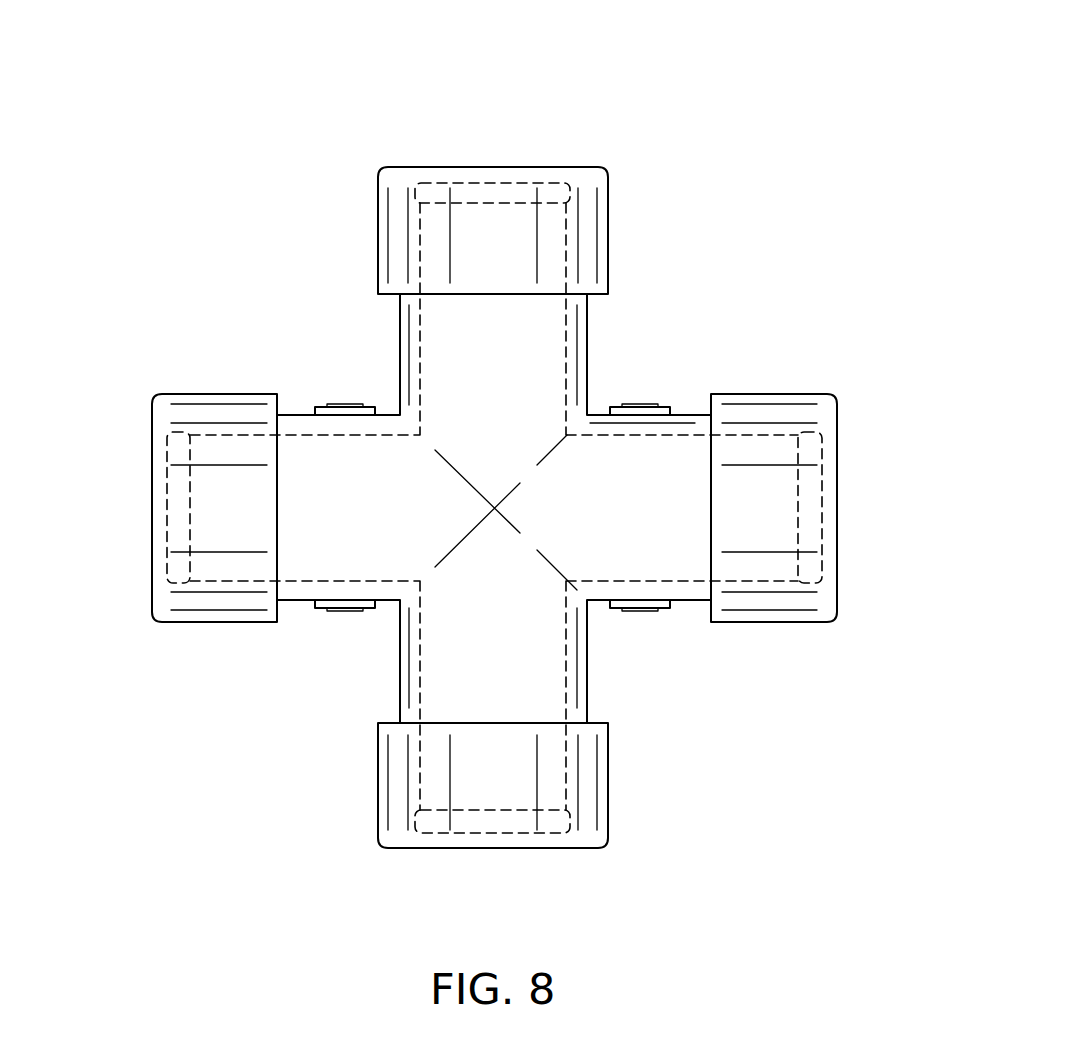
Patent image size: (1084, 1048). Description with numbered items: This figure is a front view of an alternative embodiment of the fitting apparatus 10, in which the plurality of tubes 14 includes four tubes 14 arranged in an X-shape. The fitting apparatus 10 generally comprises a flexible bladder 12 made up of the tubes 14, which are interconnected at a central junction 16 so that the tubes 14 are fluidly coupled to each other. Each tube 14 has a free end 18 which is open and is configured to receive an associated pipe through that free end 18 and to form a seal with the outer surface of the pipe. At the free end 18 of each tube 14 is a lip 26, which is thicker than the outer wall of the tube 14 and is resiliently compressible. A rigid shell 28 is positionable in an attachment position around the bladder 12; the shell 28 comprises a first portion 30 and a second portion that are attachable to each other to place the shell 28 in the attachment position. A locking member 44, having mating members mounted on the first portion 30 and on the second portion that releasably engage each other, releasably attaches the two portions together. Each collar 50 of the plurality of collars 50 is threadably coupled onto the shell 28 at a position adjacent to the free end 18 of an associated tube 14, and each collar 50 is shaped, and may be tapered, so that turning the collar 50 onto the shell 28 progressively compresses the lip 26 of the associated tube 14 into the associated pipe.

The fitting apparatus 10 is at (686, 172).
The bladder 12 is at (695, 633).
The tube 14 is at (537, 365).
The central junction 16 is at (418, 437).
The free end 18 is at (498, 160).
The lip 26 is at (461, 183).
The shell 28 is at (598, 683).
The first portion 30 is at (603, 455).
The locking member 44 is at (645, 392).
The collar 50 is at (587, 208).